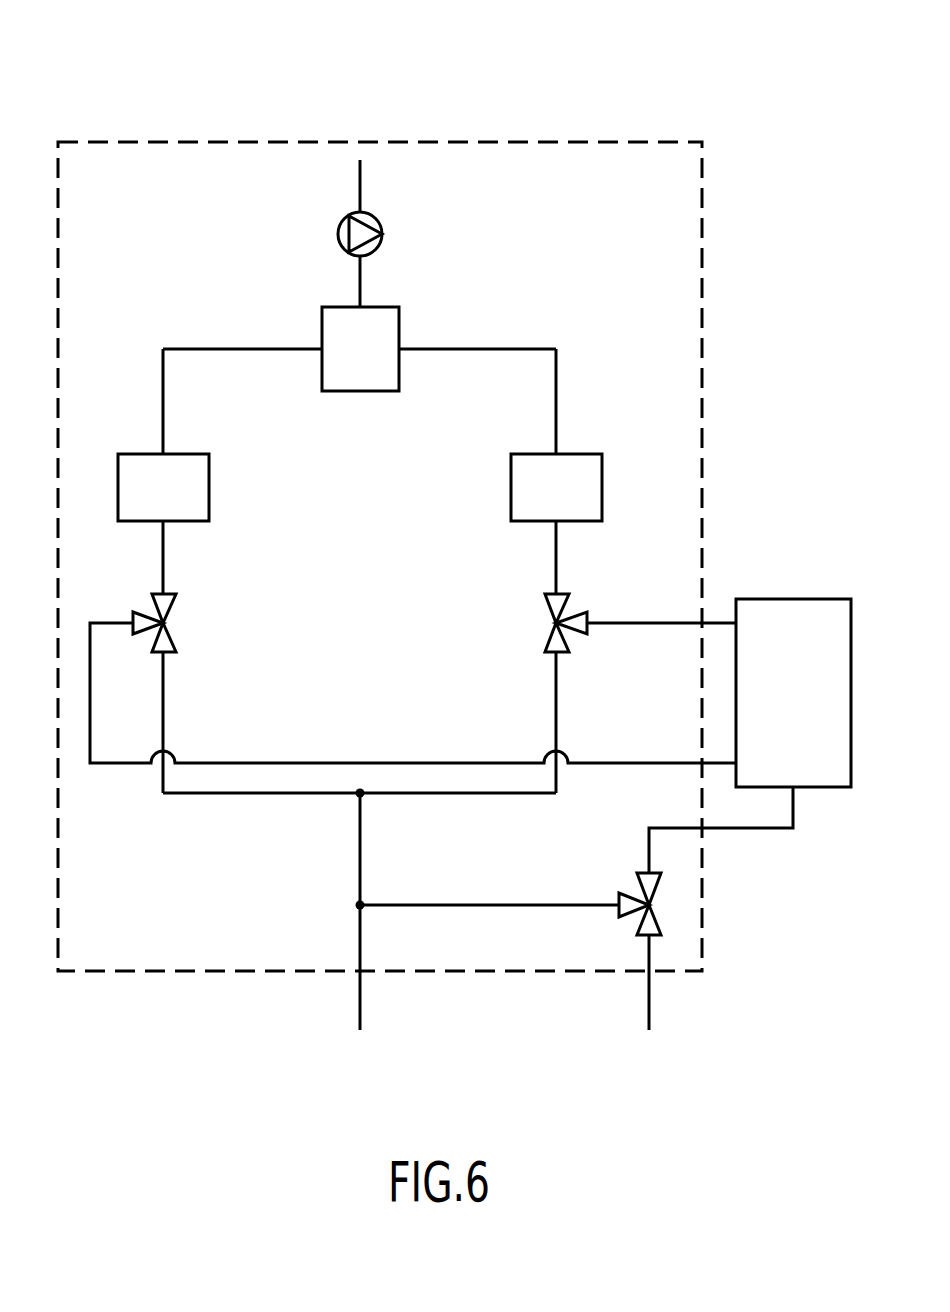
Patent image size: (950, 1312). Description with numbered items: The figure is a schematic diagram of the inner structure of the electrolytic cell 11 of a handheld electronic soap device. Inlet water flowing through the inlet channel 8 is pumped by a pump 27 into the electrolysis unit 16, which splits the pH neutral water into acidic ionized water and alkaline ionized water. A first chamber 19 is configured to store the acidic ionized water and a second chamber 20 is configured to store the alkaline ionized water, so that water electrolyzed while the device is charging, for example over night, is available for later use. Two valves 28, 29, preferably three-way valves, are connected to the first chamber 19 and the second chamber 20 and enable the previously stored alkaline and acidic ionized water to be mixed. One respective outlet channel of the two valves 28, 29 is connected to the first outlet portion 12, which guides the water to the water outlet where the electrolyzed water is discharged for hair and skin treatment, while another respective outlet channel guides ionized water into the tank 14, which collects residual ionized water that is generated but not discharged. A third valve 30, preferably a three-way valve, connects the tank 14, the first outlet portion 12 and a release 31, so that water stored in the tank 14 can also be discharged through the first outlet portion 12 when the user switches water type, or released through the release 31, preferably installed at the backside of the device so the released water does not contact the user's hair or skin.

The electrolytic cell 11 is at (98, 99).
The inlet channel 8 is at (367, 185).
The pump 27 is at (383, 236).
The electrolysis unit 16 is at (399, 320).
The first chamber 19 is at (209, 487).
The second chamber 20 is at (602, 487).
The valve 28 is at (170, 633).
The valve 29 is at (548, 637).
The tank 14 is at (793, 599).
The third valve 30 is at (656, 915).
The first outlet portion 12 is at (351, 979).
The release 31 is at (638, 979).